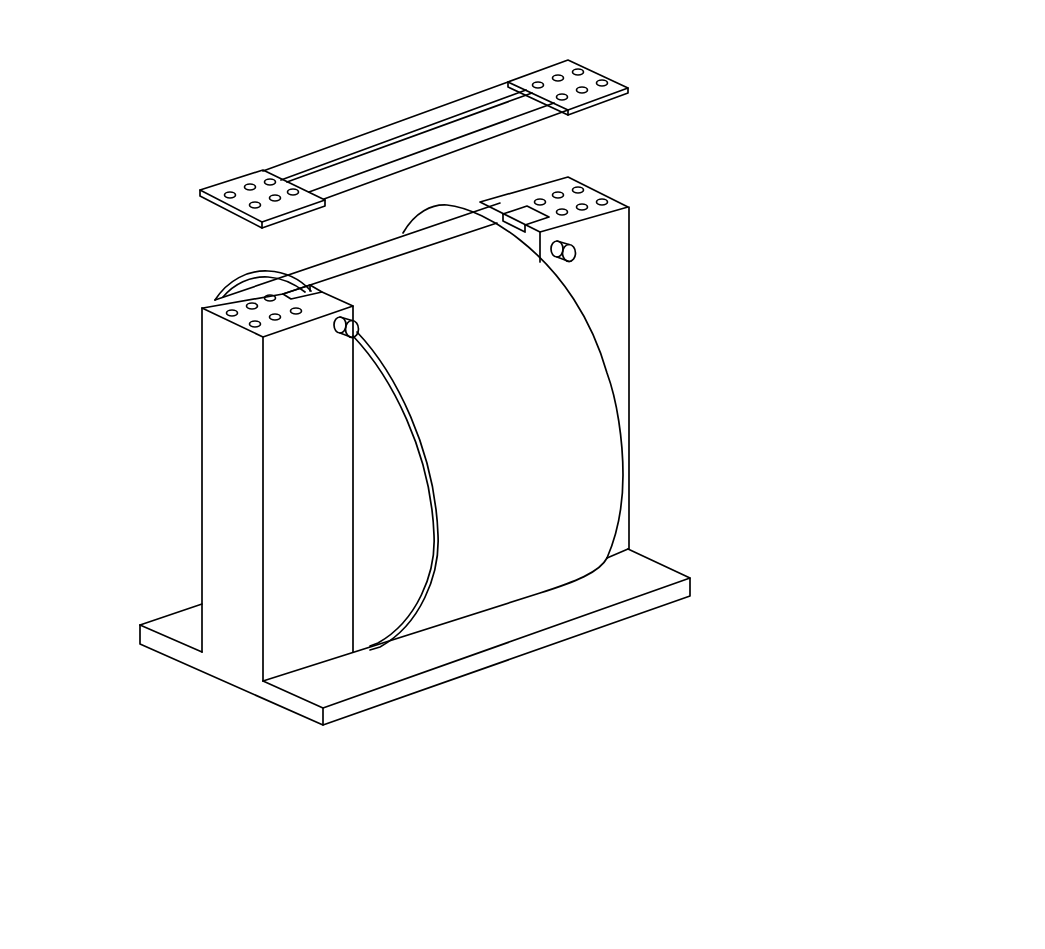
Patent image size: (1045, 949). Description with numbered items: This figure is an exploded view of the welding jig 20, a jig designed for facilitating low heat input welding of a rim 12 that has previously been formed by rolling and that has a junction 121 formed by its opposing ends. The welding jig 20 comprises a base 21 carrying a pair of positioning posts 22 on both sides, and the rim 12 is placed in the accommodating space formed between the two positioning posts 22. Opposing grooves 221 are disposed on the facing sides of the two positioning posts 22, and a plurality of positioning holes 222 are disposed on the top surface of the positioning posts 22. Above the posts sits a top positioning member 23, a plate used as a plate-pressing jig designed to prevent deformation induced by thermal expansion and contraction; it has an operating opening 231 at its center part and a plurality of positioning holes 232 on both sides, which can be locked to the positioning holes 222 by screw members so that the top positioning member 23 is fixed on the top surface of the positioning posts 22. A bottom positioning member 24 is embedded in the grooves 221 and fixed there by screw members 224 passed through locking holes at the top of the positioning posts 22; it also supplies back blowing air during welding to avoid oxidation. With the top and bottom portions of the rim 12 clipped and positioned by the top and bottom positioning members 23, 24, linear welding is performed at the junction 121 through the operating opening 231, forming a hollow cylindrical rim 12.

The rim 12 is at (600, 457).
The junction 121 is at (316, 276).
The welding jig 20 is at (655, 390).
The base 21 is at (592, 636).
The positioning posts 22 is at (217, 500).
The grooves 221 is at (510, 220).
The positioning holes 222 is at (578, 190).
The screw members 224 is at (347, 336).
The top positioning member 23 is at (468, 116).
The operating opening 231 is at (405, 148).
The positioning holes 232 is at (578, 70).
The bottom positioning member 24 is at (550, 224).